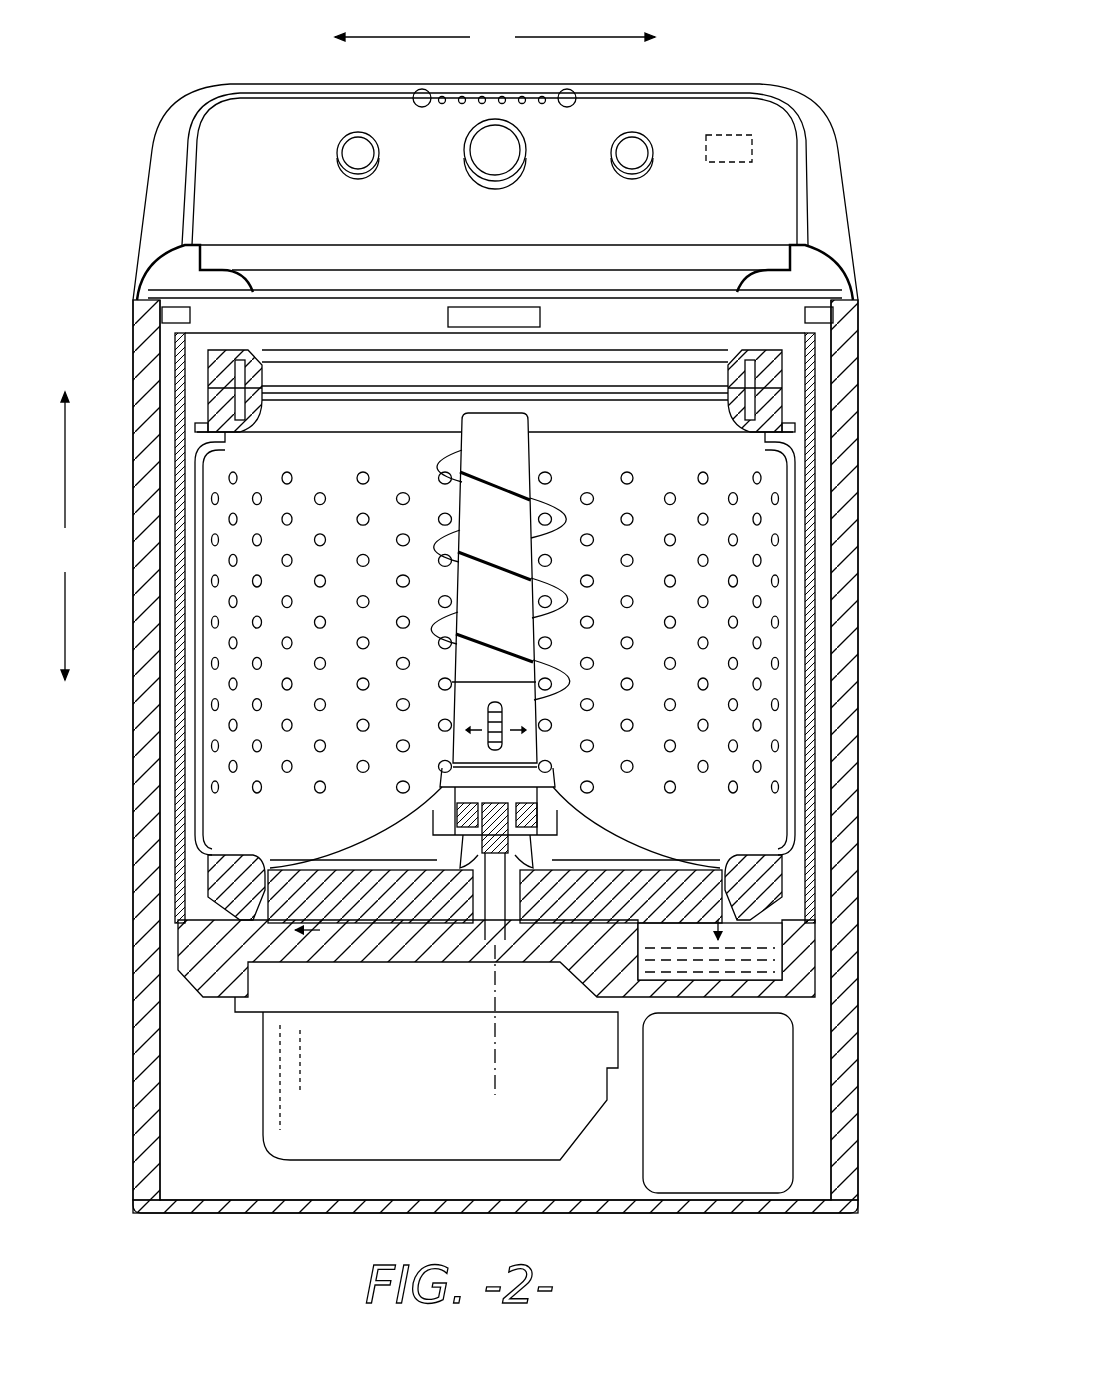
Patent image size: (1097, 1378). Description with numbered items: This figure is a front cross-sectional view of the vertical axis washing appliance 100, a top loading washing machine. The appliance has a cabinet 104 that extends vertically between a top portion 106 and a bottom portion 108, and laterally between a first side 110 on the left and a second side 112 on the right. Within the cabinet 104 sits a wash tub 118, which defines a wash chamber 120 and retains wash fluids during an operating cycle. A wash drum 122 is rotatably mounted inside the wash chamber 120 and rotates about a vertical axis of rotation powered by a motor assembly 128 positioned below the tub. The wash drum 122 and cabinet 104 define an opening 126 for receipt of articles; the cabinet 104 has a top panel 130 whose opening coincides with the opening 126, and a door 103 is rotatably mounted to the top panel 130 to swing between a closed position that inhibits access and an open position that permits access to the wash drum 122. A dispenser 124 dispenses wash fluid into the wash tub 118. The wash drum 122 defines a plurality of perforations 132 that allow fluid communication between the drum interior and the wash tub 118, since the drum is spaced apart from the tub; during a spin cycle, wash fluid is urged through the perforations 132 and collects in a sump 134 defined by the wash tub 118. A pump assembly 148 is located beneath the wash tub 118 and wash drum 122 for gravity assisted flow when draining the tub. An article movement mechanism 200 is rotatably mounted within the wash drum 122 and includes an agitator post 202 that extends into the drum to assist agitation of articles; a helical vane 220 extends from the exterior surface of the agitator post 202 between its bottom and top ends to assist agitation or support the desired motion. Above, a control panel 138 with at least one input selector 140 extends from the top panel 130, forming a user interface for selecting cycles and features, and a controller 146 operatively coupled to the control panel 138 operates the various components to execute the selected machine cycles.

The vertical axis washing appliance 100 is at (150, 80).
The door 103 is at (752, 293).
The cabinet 104 is at (852, 548).
The top portion 106 is at (870, 300).
The bottom portion 108 is at (870, 1188).
The first side 110 is at (130, 1015).
The second side 112 is at (870, 1015).
The wash tub 118 is at (818, 610).
The wash chamber 120 is at (282, 705).
The wash drum 122 is at (790, 452).
The dispenser 124 is at (500, 300).
The opening 126 is at (288, 330).
The motor assembly 128 is at (412, 1098).
The top panel 130 is at (800, 292).
The perforations 132 is at (255, 795).
The sump 134 is at (762, 935).
The control panel 138 is at (632, 122).
The input selector 140 is at (483, 150).
The controller 146 is at (740, 133).
The pump assembly 148 is at (745, 1116).
The article movement mechanism 200 is at (556, 497).
The agitator post 202 is at (478, 527).
The helical vane 220 is at (438, 623).